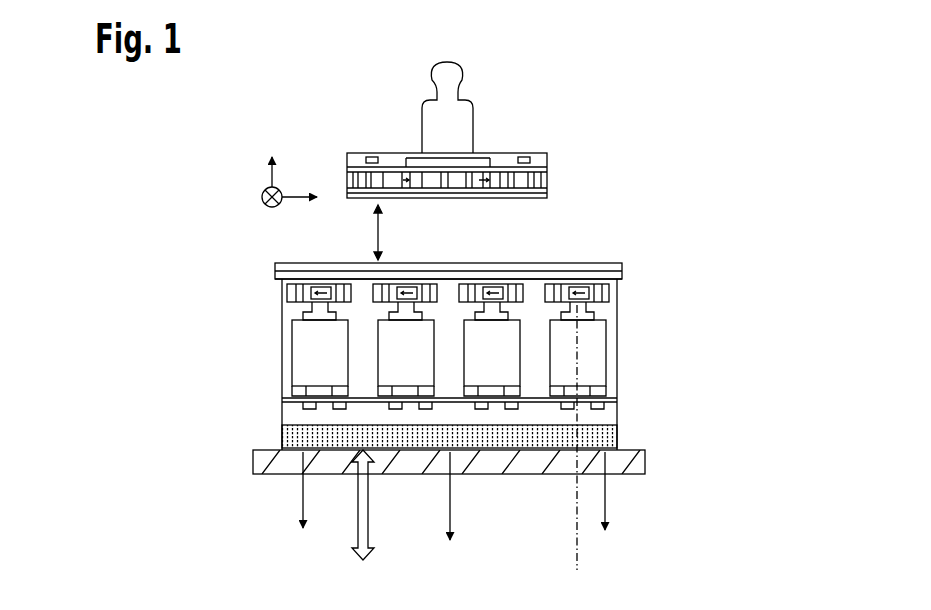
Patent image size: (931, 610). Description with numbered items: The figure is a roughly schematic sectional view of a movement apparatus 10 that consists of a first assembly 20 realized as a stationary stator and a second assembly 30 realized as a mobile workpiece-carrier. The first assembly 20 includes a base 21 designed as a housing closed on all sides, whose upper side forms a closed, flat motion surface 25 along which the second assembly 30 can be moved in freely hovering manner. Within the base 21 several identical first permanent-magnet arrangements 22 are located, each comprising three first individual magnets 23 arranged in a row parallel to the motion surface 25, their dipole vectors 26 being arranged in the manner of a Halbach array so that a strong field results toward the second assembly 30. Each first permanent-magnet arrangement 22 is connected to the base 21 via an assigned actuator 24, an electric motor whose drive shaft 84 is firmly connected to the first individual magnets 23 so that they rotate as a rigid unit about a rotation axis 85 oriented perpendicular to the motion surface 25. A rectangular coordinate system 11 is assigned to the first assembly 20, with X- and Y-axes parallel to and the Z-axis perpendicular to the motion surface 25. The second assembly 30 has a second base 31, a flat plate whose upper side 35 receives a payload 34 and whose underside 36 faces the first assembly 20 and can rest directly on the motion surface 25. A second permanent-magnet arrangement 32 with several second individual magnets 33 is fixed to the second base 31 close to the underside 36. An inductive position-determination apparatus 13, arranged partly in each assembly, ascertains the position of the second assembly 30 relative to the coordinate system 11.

The movement apparatus 10 is at (668, 73).
The rectangular coordinate system 11 is at (272, 177).
The position-determination apparatus 13 is at (548, 185).
The first assembly 20 is at (615, 385).
The base 21 is at (449, 417).
The first permanent-magnet arrangement 22 is at (321, 283).
The first individual magnet 23 is at (289, 267).
The actuator 24 is at (307, 365).
The motion surface 25 is at (607, 262).
The dipole vector 26 is at (350, 280).
The second assembly 30 is at (548, 163).
The second base 31 is at (448, 162).
The second permanent-magnet arrangement 32 is at (368, 160).
The second individual magnet 33 is at (402, 167).
The payload 34 is at (458, 76).
The upper side 35 is at (537, 153).
The underside 36 is at (540, 198).
The drive shaft 84 is at (583, 308).
The rotation axis 85 is at (578, 338).